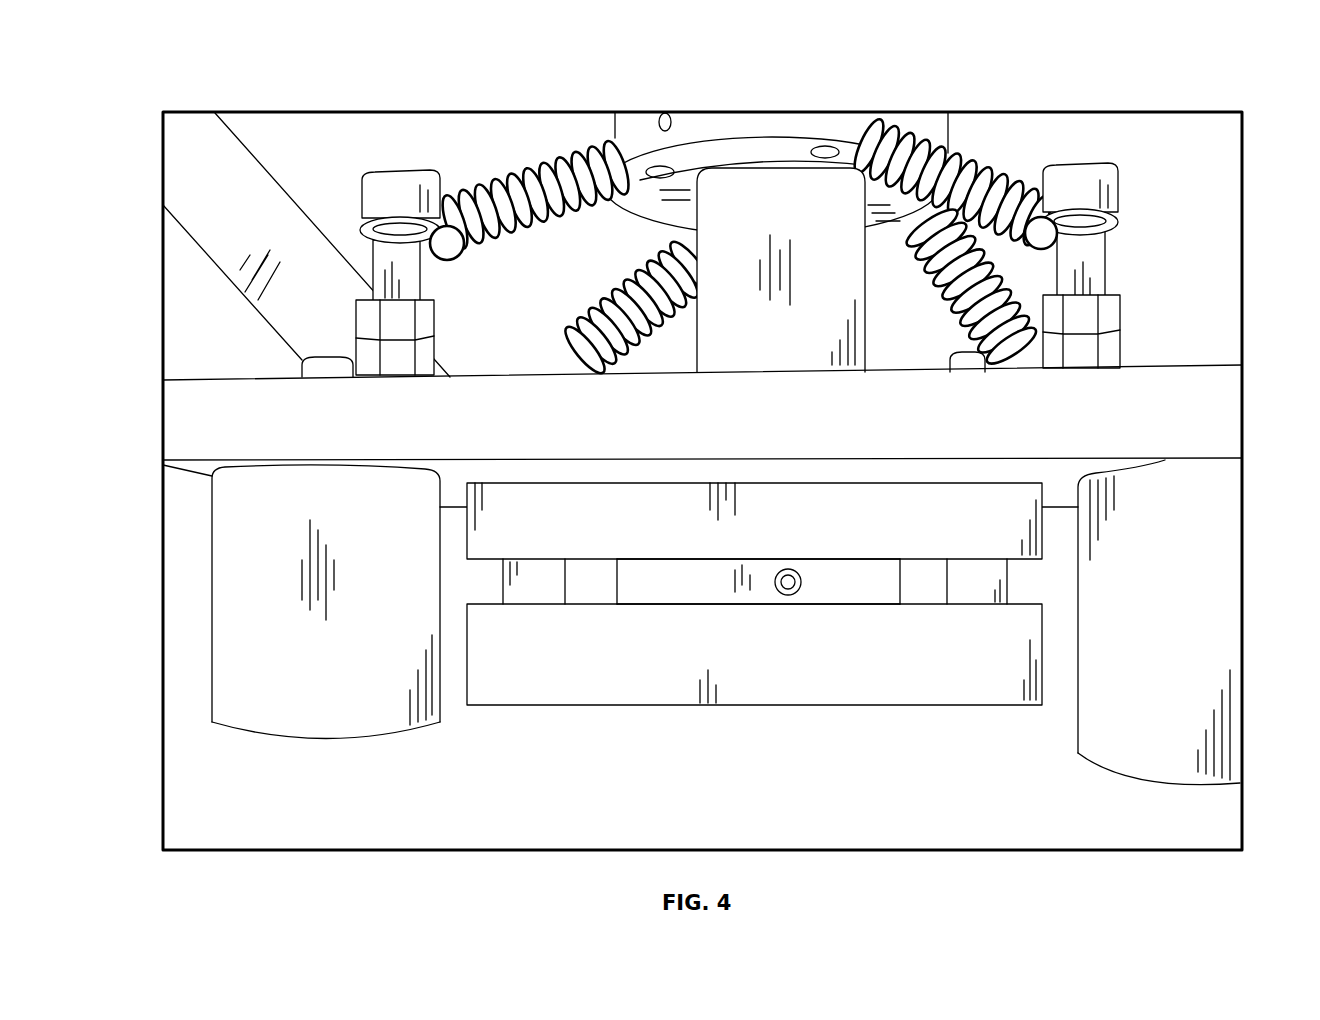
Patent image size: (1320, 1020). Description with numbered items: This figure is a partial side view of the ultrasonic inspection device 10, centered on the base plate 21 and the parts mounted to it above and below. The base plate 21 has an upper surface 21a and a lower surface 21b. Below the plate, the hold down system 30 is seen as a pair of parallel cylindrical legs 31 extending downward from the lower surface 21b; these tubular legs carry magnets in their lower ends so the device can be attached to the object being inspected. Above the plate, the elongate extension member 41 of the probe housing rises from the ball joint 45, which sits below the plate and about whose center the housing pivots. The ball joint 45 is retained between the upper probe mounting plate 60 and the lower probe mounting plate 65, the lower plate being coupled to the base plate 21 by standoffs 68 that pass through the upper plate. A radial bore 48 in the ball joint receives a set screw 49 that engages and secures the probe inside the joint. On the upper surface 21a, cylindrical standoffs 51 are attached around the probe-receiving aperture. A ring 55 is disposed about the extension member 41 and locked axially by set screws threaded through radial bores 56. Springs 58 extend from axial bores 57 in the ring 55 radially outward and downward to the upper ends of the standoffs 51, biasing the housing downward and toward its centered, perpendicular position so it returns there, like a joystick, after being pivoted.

The ultrasonic inspection device 10 is at (183, 88).
The base plate 21 is at (733, 417).
The upper surface 21a is at (1228, 366).
The lower surface 21b is at (1157, 464).
The hold down system 30 is at (755, 622).
The legs 31 is at (254, 737).
The extension member 41 is at (760, 368).
The ball joint 45 is at (703, 600).
The bore 48 is at (800, 588).
The set screw 49 is at (785, 596).
The standoffs 51 is at (395, 172).
The ring 55 is at (805, 120).
The bores 56 is at (662, 112).
The bores 57 is at (820, 162).
The springs 58 is at (503, 175).
The upper probe mounting plate 60 is at (795, 533).
The lower probe mounting plate 65 is at (795, 685).
The standoffs 68 is at (538, 600).